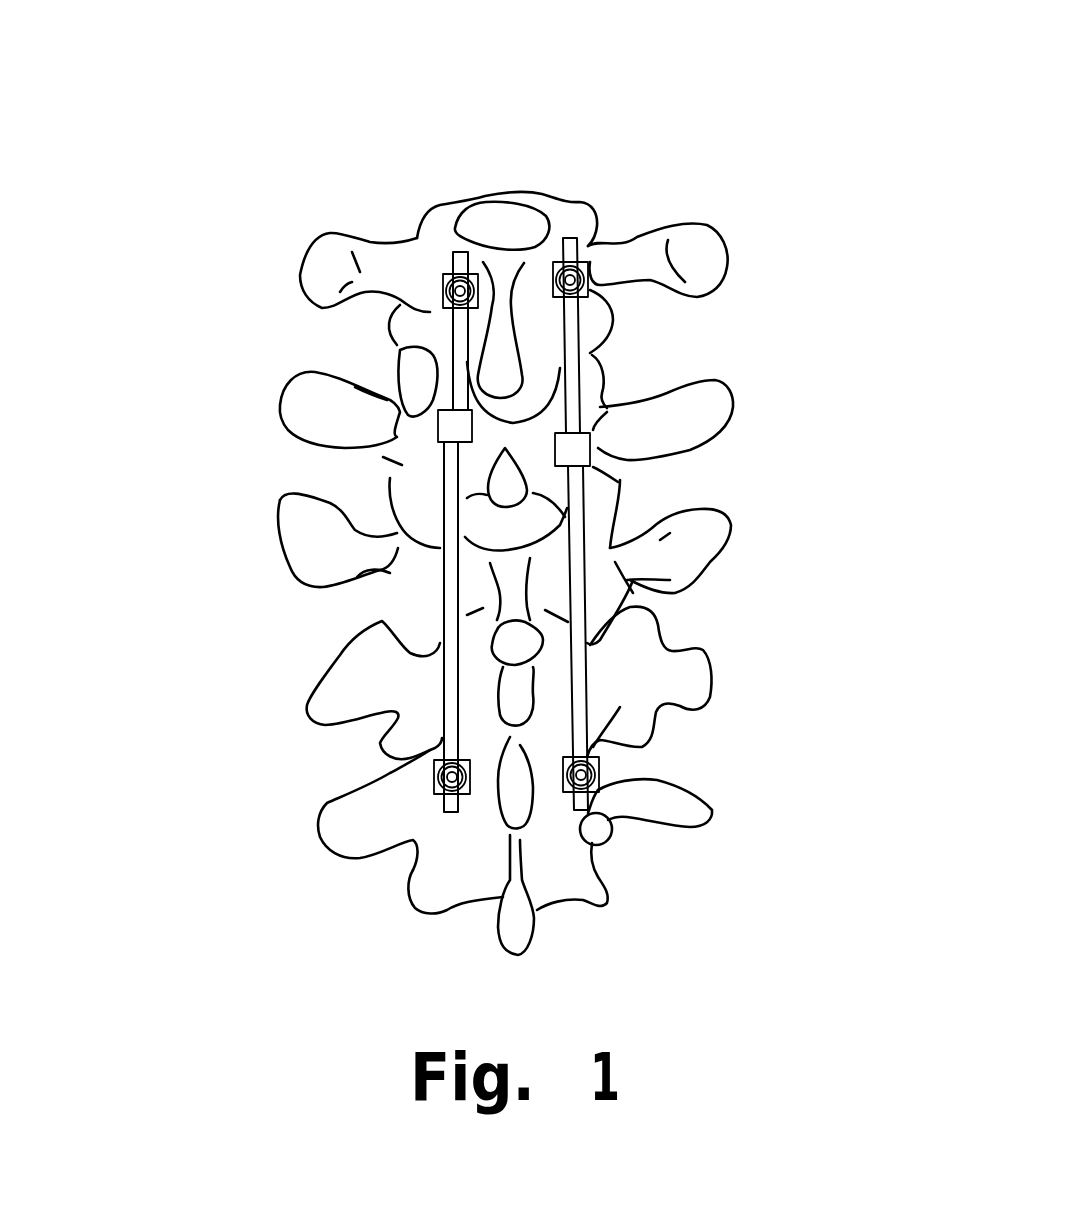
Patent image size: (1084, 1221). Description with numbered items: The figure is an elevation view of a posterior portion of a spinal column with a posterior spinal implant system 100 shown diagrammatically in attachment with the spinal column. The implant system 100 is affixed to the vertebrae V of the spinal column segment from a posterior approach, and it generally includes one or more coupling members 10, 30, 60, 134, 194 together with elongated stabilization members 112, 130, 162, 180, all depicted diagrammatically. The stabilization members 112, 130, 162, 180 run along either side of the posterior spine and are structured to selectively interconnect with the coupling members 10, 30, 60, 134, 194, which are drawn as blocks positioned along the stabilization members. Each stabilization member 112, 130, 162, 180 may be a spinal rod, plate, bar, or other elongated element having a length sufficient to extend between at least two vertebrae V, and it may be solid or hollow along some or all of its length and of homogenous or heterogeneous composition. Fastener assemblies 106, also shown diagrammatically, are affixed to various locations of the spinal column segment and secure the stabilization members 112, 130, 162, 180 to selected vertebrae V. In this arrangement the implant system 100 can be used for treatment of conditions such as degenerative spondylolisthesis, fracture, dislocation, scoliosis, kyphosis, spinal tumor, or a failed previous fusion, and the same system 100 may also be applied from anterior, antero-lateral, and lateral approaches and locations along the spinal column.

The posterior spinal implant system 100 is at (858, 94).
The fastener assembly 106 is at (425, 270).
The elongated stabilization member 112 is at (479, 525).
The elongated stabilization member 130 is at (479, 525).
The elongated stabilization member 162 is at (479, 525).
The elongated stabilization member 180 is at (700, 617).
The coupling member 10 is at (516, 452).
The coupling member 30 is at (516, 452).
The coupling member 60 is at (516, 452).
The coupling member 134 is at (516, 452).
The coupling member 194 is at (417, 443).
The vertebrae V is at (725, 250).